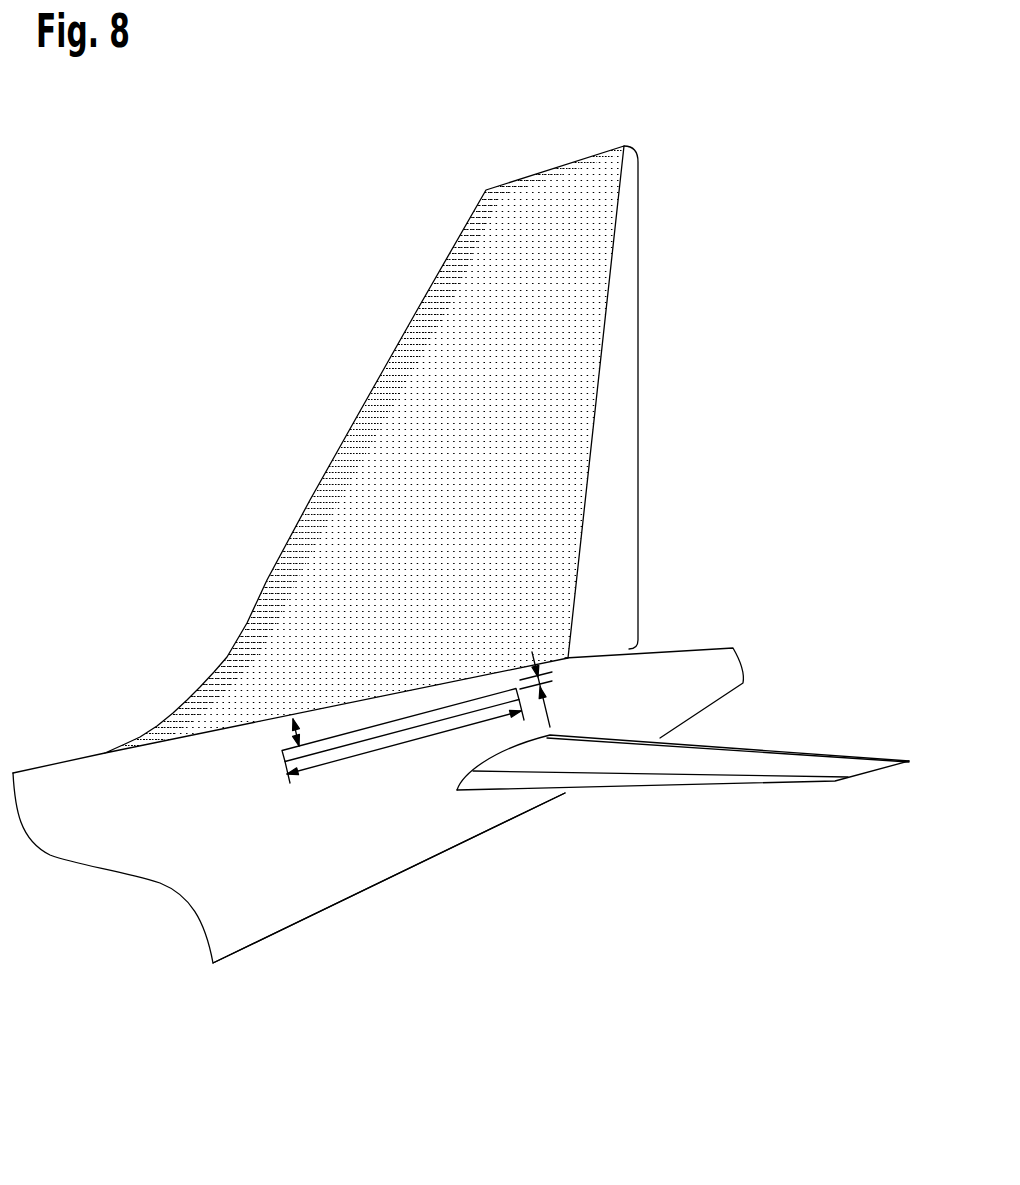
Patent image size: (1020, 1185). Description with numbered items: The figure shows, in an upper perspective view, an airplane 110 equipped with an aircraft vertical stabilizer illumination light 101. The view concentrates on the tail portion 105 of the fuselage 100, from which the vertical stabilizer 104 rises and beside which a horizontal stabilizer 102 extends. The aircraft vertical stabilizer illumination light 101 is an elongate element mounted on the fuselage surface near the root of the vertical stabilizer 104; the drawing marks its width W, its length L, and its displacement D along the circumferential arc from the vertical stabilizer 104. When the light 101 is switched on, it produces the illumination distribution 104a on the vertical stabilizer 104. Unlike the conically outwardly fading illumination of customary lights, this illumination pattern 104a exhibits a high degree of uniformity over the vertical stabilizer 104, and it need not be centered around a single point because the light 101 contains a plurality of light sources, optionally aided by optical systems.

The fuselage 100 is at (287, 903).
The aircraft vertical stabilizer illumination light 101 is at (353, 742).
The horizontal stabilizer 102 is at (810, 768).
The vertical stabilizer 104 is at (393, 405).
The illumination distribution 104a is at (639, 392).
The tail portion 105 is at (432, 880).
The airplane 110 is at (404, 492).